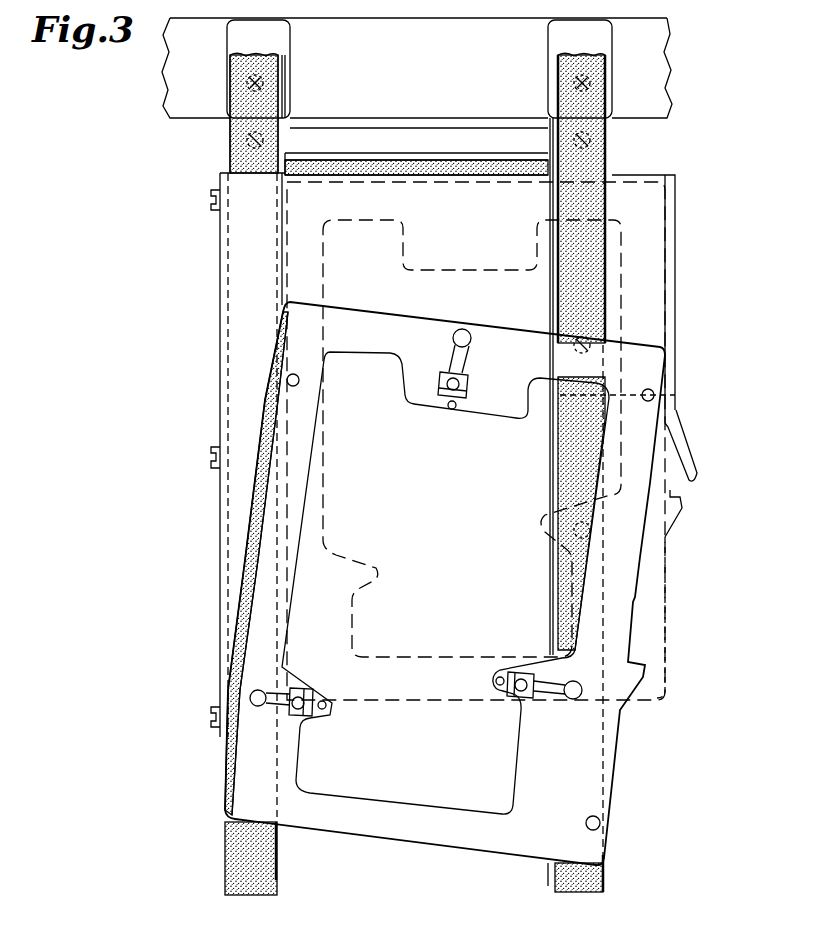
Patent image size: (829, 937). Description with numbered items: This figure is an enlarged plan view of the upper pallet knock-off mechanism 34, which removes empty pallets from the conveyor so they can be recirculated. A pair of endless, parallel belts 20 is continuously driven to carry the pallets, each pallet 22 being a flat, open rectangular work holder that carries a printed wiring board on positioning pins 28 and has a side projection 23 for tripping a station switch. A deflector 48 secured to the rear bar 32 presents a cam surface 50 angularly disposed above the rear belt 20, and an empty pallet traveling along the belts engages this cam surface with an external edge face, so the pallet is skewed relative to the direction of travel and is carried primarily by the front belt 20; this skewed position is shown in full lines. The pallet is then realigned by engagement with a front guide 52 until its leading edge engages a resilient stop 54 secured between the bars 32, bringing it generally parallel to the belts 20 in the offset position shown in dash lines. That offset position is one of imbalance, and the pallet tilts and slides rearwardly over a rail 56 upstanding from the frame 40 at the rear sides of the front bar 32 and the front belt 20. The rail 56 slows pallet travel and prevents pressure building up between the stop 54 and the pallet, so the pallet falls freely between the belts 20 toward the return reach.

The endless parallel belt 20 is at (246, 56).
The pallet 22 is at (640, 557).
The side projection 23 is at (682, 500).
The positioning pin 28 is at (451, 410).
The rear bar 32 is at (278, 856).
The upper pallet knock-off mechanism 34 is at (142, 397).
The frame 40 is at (668, 98).
The deflector 48 is at (222, 262).
The cam surface 50 is at (268, 434).
The front guide 52 is at (678, 270).
The resilient stop 54 is at (430, 174).
The rail 56 is at (552, 196).